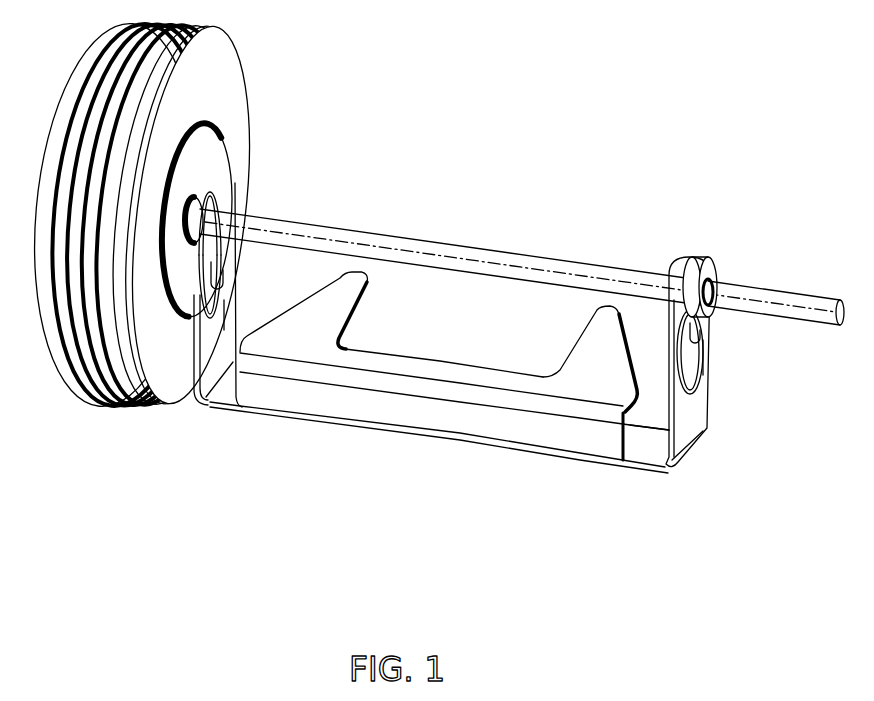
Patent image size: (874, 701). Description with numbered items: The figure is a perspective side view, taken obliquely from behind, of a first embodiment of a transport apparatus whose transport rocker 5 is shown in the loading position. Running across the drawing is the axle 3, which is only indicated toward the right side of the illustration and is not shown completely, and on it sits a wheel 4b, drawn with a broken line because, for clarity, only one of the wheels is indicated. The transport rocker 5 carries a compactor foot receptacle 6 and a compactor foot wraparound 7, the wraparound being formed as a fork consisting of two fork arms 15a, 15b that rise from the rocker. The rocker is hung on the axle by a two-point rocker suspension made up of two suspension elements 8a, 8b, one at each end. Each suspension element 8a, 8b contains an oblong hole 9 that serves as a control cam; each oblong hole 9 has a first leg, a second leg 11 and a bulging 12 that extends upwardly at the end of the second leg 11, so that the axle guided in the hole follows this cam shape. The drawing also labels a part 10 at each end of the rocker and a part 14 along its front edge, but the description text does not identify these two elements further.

The axle 3 is at (460, 250).
The wheel 4b is at (82, 73).
The transport rocker 5 is at (650, 445).
The compactor foot receptacle 6 is at (417, 410).
The compactor foot wraparound 7 is at (362, 352).
The suspension element 8a is at (702, 263).
The suspension element 8b is at (220, 213).
The oblong hole 9 is at (203, 323).
The upright bracket arm 10 is at (197, 300).
The second leg 11 is at (224, 305).
The bulging 12 is at (700, 335).
The front flange 14 is at (525, 448).
The fork arm 15a is at (356, 275).
The fork arm 15b is at (607, 323).